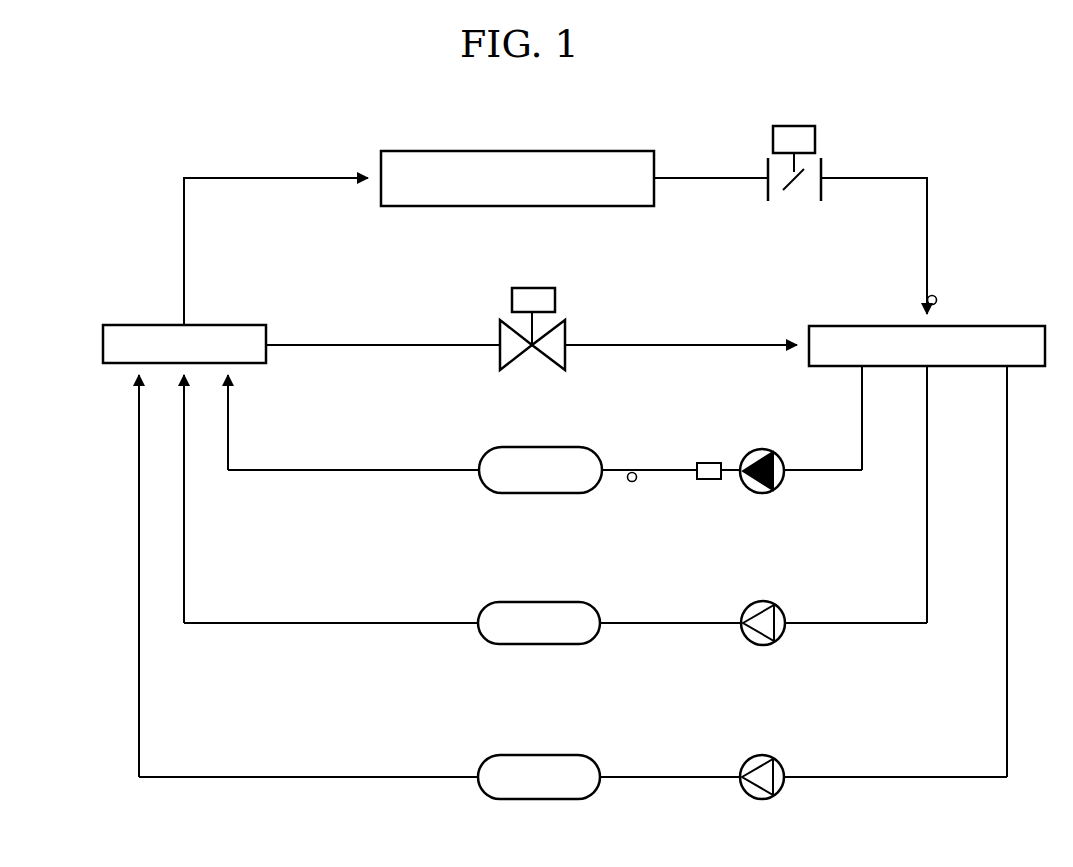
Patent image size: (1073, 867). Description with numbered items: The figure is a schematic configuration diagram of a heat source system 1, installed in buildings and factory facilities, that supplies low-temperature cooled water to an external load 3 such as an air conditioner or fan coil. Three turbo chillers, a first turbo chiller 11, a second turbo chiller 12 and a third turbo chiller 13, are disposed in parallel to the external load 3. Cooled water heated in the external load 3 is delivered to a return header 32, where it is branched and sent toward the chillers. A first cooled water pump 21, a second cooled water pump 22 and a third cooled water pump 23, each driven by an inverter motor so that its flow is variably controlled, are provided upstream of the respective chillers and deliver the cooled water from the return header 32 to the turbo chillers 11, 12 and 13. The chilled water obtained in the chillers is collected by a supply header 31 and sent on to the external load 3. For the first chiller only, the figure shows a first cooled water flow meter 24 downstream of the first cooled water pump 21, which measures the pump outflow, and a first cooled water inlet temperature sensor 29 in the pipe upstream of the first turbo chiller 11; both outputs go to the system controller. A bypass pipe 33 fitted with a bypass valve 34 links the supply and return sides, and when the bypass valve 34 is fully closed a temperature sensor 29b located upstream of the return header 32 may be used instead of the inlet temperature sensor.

The heat source system 1 is at (152, 199).
The external load 3 is at (657, 162).
The first turbo chiller 11 is at (484, 456).
The second turbo chiller 12 is at (483, 608).
The third turbo chiller 13 is at (483, 762).
The first cooled water pump 21 is at (783, 478).
The second cooled water pump 22 is at (785, 632).
The third cooled water pump 23 is at (785, 788).
The first cooled water flow meter 24 is at (709, 481).
The first cooled water inlet temperature sensor 29 is at (633, 483).
The temperature sensor 29b is at (937, 298).
The supply header 31 is at (160, 324).
The return header 32 is at (1027, 367).
The bypass pipe 33 is at (735, 343).
The bypass valve 34 is at (497, 336).